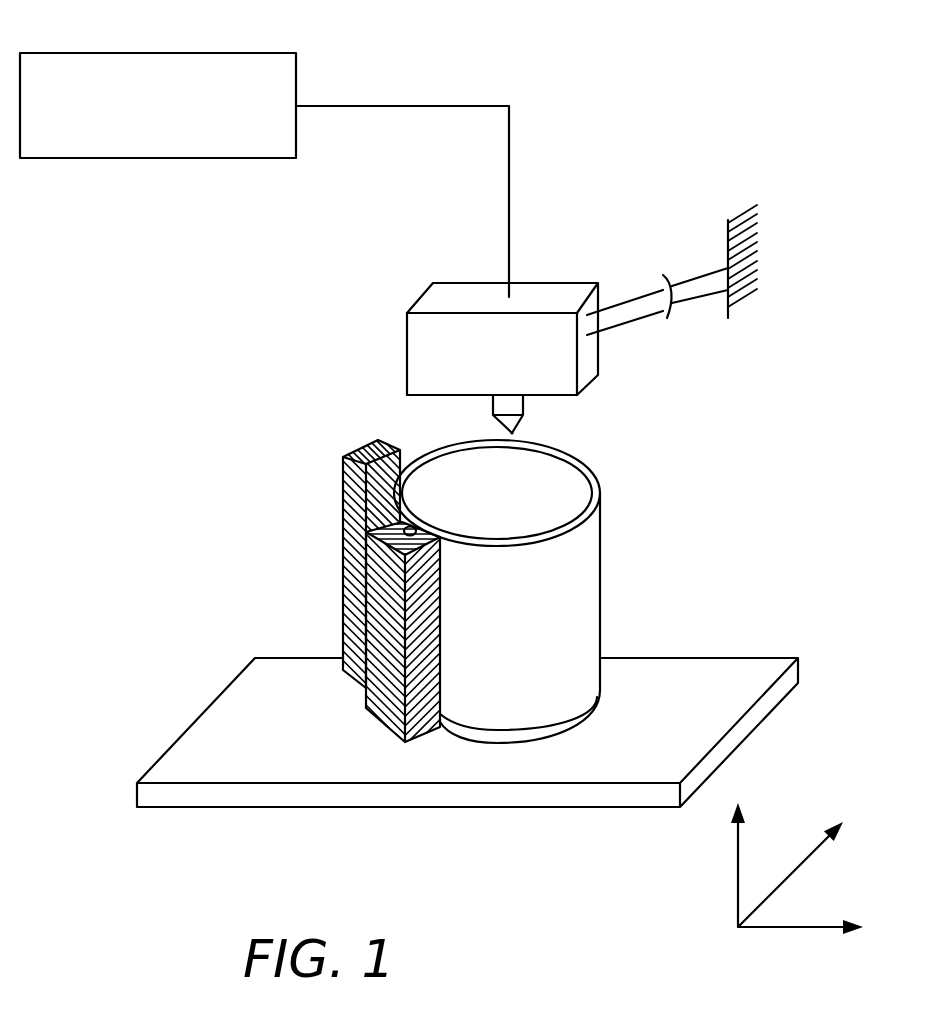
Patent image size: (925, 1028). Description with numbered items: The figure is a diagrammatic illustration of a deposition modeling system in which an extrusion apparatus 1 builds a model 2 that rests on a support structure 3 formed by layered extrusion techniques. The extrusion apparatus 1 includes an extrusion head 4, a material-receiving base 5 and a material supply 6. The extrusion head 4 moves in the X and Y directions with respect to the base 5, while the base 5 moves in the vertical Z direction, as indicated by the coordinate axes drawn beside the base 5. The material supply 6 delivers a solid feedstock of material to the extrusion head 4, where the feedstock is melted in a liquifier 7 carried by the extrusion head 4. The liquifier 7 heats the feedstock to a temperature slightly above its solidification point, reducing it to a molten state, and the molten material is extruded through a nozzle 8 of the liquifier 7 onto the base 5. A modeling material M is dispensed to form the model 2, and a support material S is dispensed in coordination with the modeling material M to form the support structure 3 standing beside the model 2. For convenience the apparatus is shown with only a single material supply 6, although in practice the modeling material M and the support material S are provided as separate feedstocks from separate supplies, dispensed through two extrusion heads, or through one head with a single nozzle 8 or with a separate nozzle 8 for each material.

The extrusion apparatus 1 is at (724, 107).
The model 2 is at (575, 567).
The support structure 3 is at (380, 602).
The extrusion head 4 is at (420, 337).
The material-receiving base 5 is at (700, 681).
The material supply 6 is at (93, 54).
The liquifier 7 is at (500, 410).
The nozzle 8 is at (517, 434).
The support material S is at (367, 490).
The modeling material M is at (509, 605).